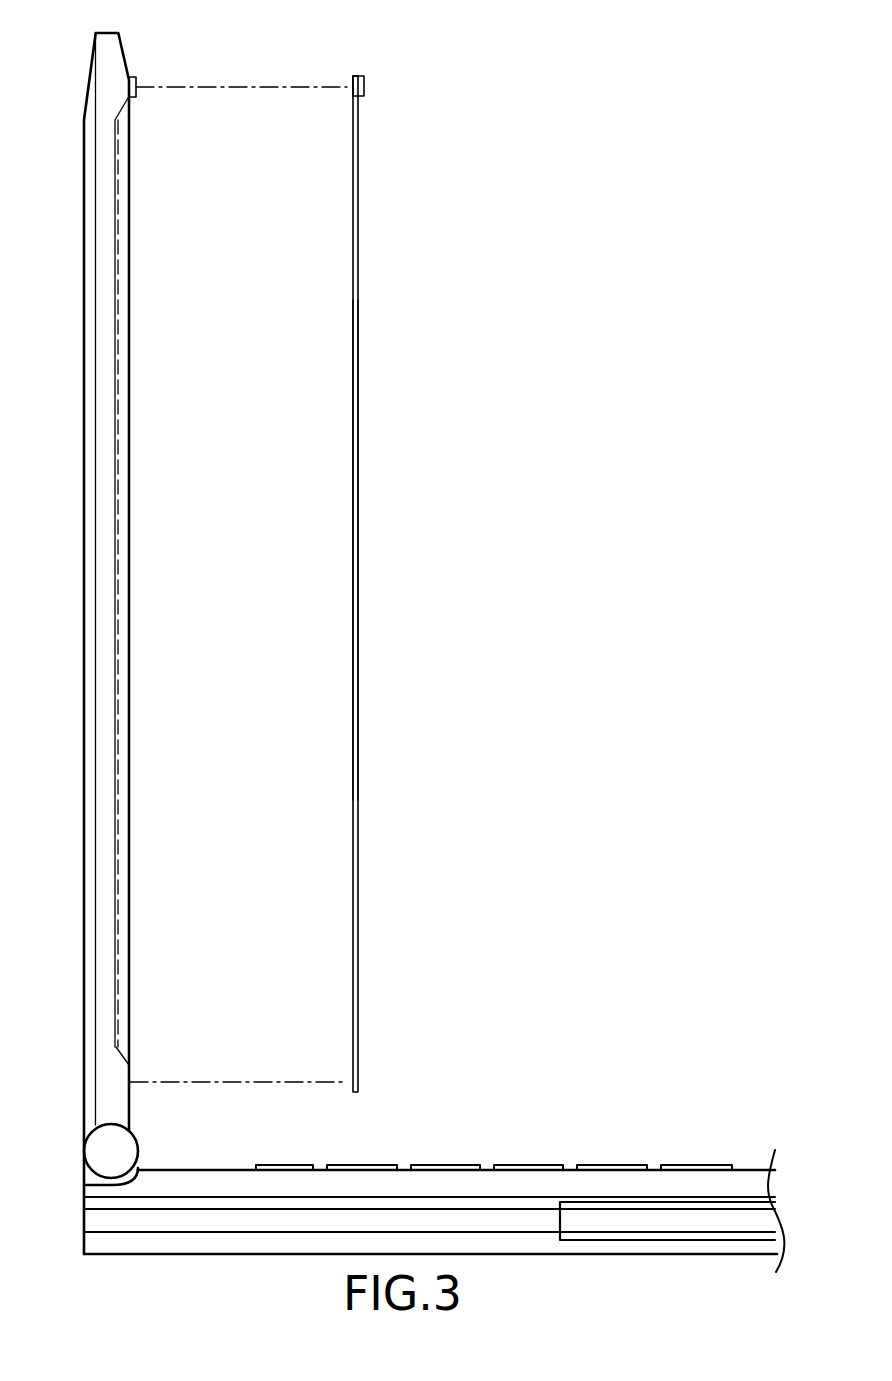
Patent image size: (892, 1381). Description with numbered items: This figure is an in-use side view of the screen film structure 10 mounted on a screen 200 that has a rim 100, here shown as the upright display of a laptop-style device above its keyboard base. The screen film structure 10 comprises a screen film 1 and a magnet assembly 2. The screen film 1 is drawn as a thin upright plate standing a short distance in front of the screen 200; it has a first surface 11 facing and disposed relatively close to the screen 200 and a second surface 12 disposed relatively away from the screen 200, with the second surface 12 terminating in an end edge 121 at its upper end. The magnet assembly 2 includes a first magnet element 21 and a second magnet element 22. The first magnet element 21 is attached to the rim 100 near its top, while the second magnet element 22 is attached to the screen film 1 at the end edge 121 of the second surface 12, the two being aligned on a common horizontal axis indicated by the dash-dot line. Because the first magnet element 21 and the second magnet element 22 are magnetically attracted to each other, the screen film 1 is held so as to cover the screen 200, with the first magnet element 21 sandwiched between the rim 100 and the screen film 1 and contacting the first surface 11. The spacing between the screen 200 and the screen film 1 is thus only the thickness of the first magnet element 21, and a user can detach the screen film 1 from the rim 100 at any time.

The rim 100 is at (127, 61).
The screen 200 is at (116, 830).
The first magnet element 21 is at (137, 90).
The screen film structure 10 is at (395, 552).
The screen film 1 is at (365, 552).
The first surface 11 is at (352, 447).
The second surface 12 is at (358, 493).
The end edge 121 is at (353, 77).
The magnet assembly 2 is at (409, 91).
The second magnet element 22 is at (363, 97).